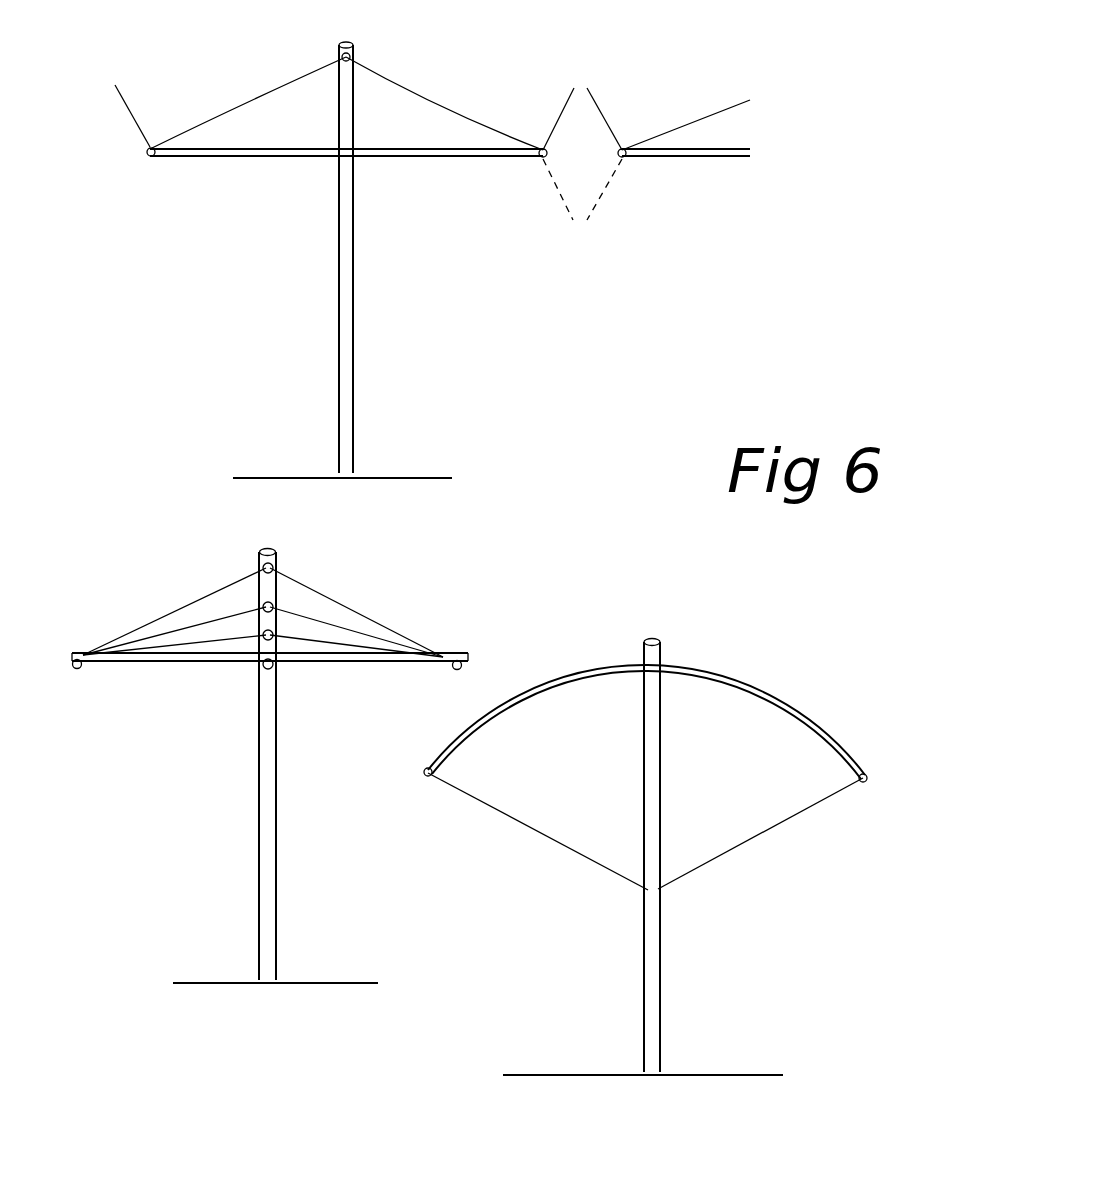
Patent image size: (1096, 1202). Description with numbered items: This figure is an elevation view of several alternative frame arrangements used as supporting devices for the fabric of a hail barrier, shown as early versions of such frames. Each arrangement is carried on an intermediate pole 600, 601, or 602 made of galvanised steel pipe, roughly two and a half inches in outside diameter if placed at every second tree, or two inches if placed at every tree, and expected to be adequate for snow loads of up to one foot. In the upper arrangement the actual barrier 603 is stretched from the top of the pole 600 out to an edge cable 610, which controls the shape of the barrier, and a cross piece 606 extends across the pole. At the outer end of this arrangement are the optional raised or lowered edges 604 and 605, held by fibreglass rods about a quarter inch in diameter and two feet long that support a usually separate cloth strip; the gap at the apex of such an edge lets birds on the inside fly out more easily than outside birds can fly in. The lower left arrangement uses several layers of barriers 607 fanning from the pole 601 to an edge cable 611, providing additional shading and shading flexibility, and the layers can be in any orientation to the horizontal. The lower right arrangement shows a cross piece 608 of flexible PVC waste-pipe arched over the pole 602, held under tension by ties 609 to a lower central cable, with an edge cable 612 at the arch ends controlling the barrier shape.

The intermediate pole 600 is at (335, 367).
The intermediate pole 601 is at (257, 908).
The intermediate pole 602 is at (633, 1006).
The barrier 603 is at (282, 84).
The raised edge 604 is at (563, 107).
The lowered edge 605 is at (558, 197).
The cross piece 606 is at (733, 167).
The barrier 607 is at (468, 588).
The cross piece 608 is at (878, 682).
The ties 609 is at (797, 813).
The edge cable 610 is at (148, 153).
The edge cable 611 is at (150, 740).
The edge cable 612 is at (426, 778).